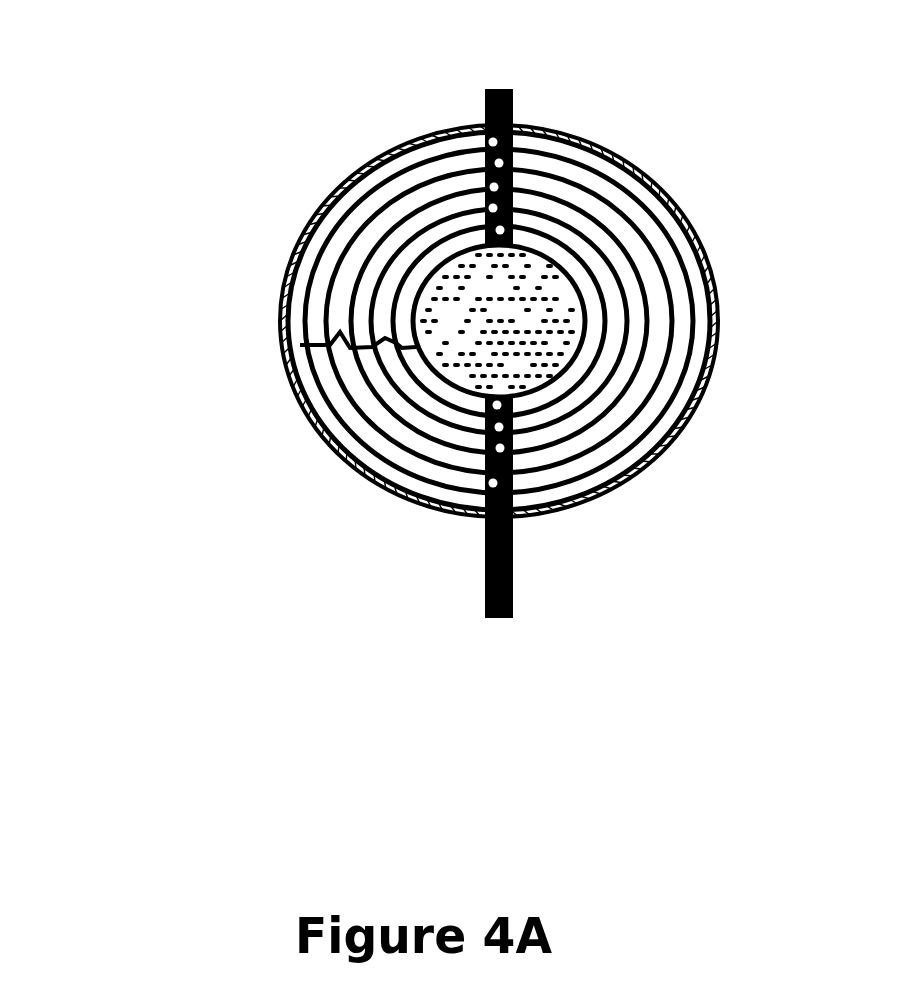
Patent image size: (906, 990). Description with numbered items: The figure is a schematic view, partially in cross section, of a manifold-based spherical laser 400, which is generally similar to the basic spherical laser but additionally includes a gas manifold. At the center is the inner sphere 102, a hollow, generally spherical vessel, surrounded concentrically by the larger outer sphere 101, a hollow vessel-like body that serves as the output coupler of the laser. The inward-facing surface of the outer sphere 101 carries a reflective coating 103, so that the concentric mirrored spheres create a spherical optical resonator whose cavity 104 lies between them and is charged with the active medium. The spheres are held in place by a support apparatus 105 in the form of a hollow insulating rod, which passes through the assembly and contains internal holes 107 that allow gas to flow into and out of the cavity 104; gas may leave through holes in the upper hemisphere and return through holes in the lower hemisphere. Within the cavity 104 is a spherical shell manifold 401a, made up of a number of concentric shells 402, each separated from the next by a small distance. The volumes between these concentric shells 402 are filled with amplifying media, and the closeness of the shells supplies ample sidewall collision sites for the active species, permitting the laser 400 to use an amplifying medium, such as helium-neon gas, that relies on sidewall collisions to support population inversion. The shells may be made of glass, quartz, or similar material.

The manifold-based spherical laser 400 is at (275, 105).
The outer sphere 101 is at (633, 160).
The inner sphere 102 is at (548, 283).
The reflective coating 103 is at (780, 322).
The cavity 104 is at (620, 463).
The support apparatus 105 is at (485, 605).
The internal holes 107 is at (482, 207).
The spherical shell manifold 401a is at (300, 345).
The concentric shells 402 is at (360, 437).